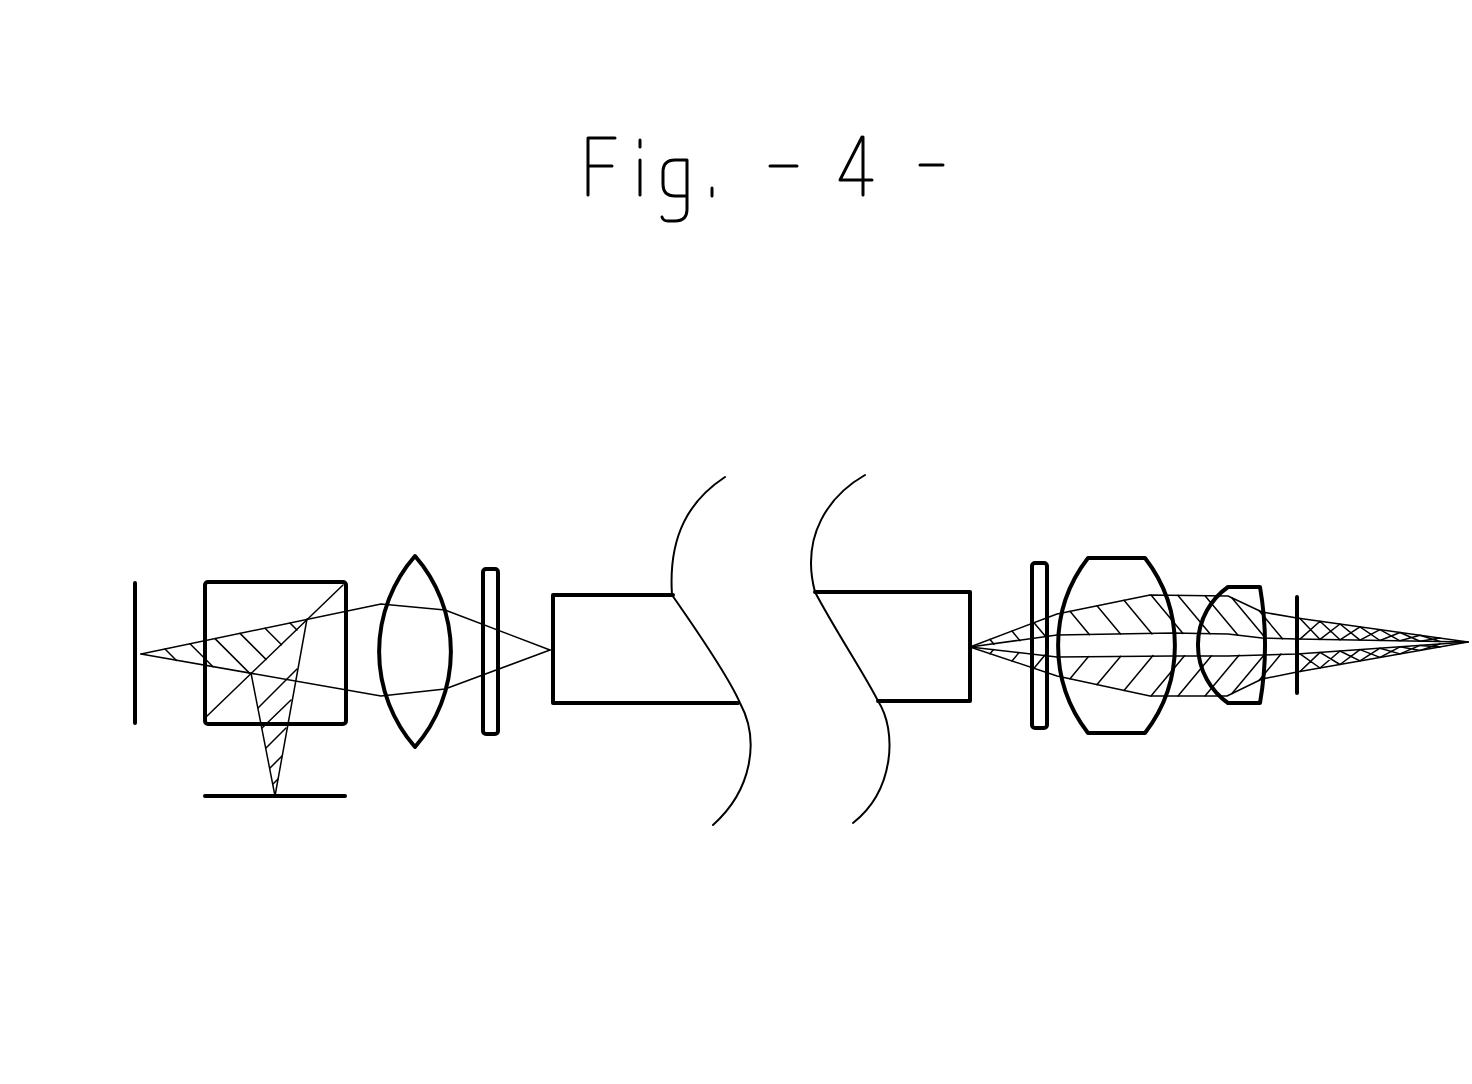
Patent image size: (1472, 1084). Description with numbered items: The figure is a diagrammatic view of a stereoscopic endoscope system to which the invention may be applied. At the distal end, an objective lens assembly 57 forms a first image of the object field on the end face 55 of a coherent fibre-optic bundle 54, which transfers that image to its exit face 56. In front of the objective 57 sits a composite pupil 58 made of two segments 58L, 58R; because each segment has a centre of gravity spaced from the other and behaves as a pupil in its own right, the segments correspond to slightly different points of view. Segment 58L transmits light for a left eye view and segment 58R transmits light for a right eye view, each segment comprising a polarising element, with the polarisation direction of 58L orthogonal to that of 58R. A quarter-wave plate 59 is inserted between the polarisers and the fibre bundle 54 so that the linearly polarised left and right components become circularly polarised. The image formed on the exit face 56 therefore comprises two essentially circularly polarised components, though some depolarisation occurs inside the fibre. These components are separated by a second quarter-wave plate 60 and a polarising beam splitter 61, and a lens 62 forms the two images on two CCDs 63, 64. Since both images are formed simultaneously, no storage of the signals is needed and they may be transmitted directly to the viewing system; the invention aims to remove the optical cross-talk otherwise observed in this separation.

The coherent fibre-optic bundle 54 is at (870, 592).
The end face 55 is at (973, 667).
The exit face 56 is at (550, 667).
The objective lens assembly 57 is at (1242, 577).
The composite pupil 58 is at (1300, 600).
The left segment of composite pupil 58L is at (1307, 620).
The right segment of composite pupil 58R is at (1310, 673).
The quarter-wave plate 59 is at (1042, 563).
The second quarter-wave plate 60 is at (493, 565).
The polarising beam splitter 61 is at (279, 578).
The lens 62 is at (418, 555).
The CCD 63 is at (280, 806).
The CCD 64 is at (136, 578).